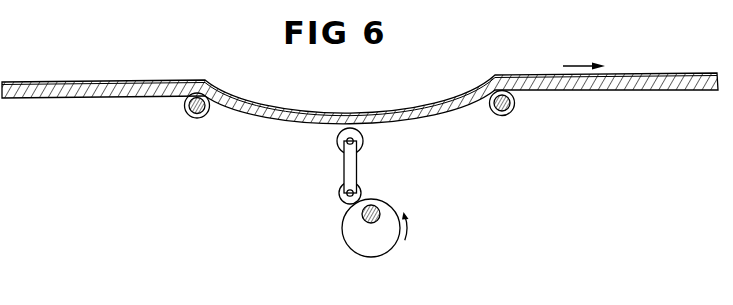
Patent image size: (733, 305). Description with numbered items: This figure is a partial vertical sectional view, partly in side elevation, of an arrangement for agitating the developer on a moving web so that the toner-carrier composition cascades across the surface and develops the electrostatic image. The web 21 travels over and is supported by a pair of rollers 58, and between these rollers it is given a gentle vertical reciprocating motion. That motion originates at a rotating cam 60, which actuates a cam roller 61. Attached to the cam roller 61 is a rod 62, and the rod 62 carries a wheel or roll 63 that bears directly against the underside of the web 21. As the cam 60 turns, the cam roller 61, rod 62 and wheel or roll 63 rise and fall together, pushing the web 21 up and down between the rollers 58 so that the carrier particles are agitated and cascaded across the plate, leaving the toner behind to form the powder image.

The web 21 is at (66, 74).
The rollers 58 is at (200, 118).
The cam 60 is at (372, 257).
The cam roller 61 is at (362, 192).
The rod 62 is at (357, 167).
The wheel or roll 63 is at (363, 143).